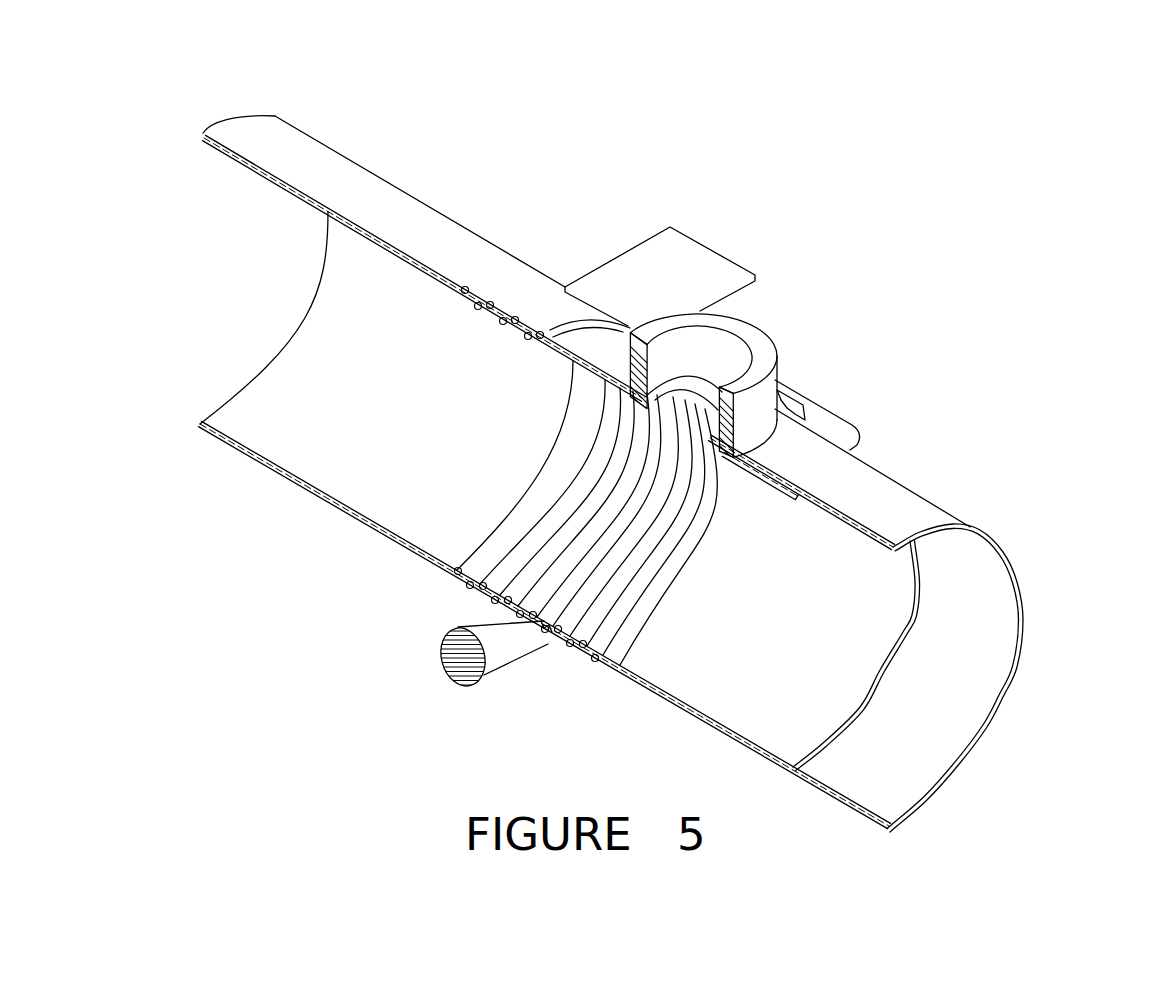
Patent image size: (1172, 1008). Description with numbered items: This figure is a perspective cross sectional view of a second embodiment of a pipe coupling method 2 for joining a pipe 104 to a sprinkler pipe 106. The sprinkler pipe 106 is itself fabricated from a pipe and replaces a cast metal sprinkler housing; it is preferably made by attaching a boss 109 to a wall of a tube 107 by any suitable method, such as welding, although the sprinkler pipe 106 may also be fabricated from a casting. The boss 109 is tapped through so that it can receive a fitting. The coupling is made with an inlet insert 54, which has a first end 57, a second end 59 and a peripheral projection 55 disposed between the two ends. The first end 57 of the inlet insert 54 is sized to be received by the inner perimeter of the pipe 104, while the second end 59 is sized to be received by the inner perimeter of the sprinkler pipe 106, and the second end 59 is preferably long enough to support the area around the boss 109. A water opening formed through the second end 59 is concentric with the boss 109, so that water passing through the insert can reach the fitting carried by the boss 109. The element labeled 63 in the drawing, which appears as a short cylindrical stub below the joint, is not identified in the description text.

The hose coupling assembly 2 is at (437, 124).
The first conduit half 104 is at (287, 397).
The second conduit half 59 is at (770, 700).
The conduit inner surface 106 is at (882, 768).
The conduit end 107 is at (980, 630).
The collar 109 is at (758, 360).
The pipe end 55 is at (570, 327).
The coiled hose 57 is at (563, 473).
The clamp 54 is at (596, 530).
The drain pipe 63 is at (443, 667).